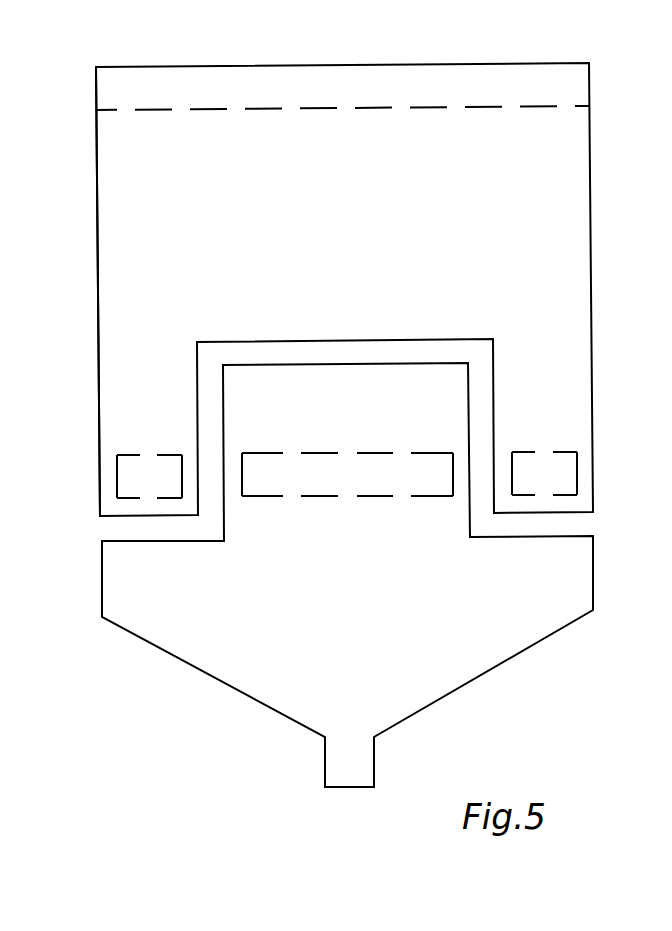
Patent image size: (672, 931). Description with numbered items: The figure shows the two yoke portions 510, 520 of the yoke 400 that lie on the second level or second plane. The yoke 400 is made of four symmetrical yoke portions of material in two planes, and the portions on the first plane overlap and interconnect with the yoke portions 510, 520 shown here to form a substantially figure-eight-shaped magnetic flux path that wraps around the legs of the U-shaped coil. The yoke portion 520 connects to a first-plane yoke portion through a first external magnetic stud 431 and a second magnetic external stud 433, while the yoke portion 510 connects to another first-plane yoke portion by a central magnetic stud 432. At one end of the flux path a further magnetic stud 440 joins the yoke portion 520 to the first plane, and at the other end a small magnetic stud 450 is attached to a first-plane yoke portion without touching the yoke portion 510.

The yoke 400 is at (112, 128).
The magnetic stud 440 is at (343, 83).
The yoke portion 520 is at (115, 183).
The first external magnetic stud 431 is at (120, 428).
The central magnetic stud 432 is at (337, 496).
The second magnetic external stud 433 is at (572, 423).
The yoke portion 510 is at (495, 648).
The small magnetic stud 450 is at (350, 777).